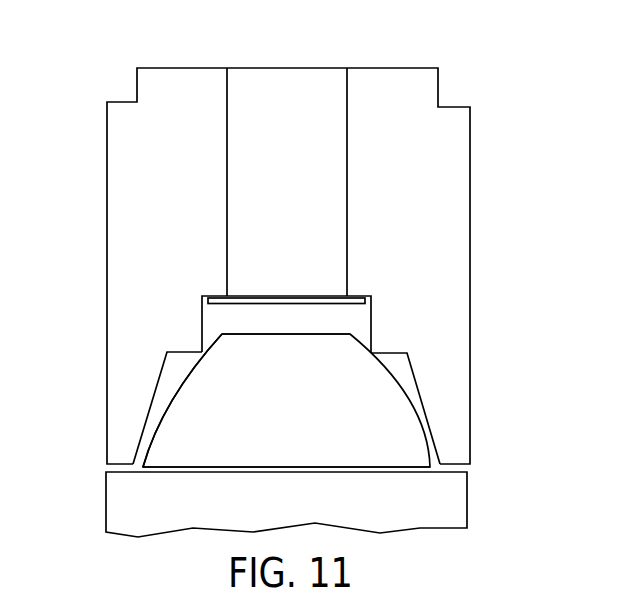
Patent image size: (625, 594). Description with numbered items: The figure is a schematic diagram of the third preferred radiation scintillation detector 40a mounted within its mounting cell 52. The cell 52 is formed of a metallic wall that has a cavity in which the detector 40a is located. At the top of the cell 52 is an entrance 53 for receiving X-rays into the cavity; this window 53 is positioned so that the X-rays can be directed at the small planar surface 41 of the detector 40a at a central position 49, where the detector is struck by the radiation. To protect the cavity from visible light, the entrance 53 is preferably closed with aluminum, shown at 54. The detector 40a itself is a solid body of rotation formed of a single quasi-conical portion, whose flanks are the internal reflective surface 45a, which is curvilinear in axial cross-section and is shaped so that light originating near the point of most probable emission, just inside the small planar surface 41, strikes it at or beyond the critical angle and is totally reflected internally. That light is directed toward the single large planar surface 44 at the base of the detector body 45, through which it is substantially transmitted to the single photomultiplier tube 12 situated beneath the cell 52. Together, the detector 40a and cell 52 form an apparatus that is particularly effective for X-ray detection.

The photomultiplier tube 12 is at (288, 512).
The scintillation detector 40a is at (413, 412).
The small planar surface 41 is at (243, 335).
The large planar surface 44 is at (362, 470).
The tip member 45 is at (160, 418).
The internal reflective surface 45a is at (173, 404).
The central position 49 is at (287, 335).
The cell 52 is at (470, 198).
The entrance 53 is at (227, 120).
The aluminum closure 54 is at (307, 298).